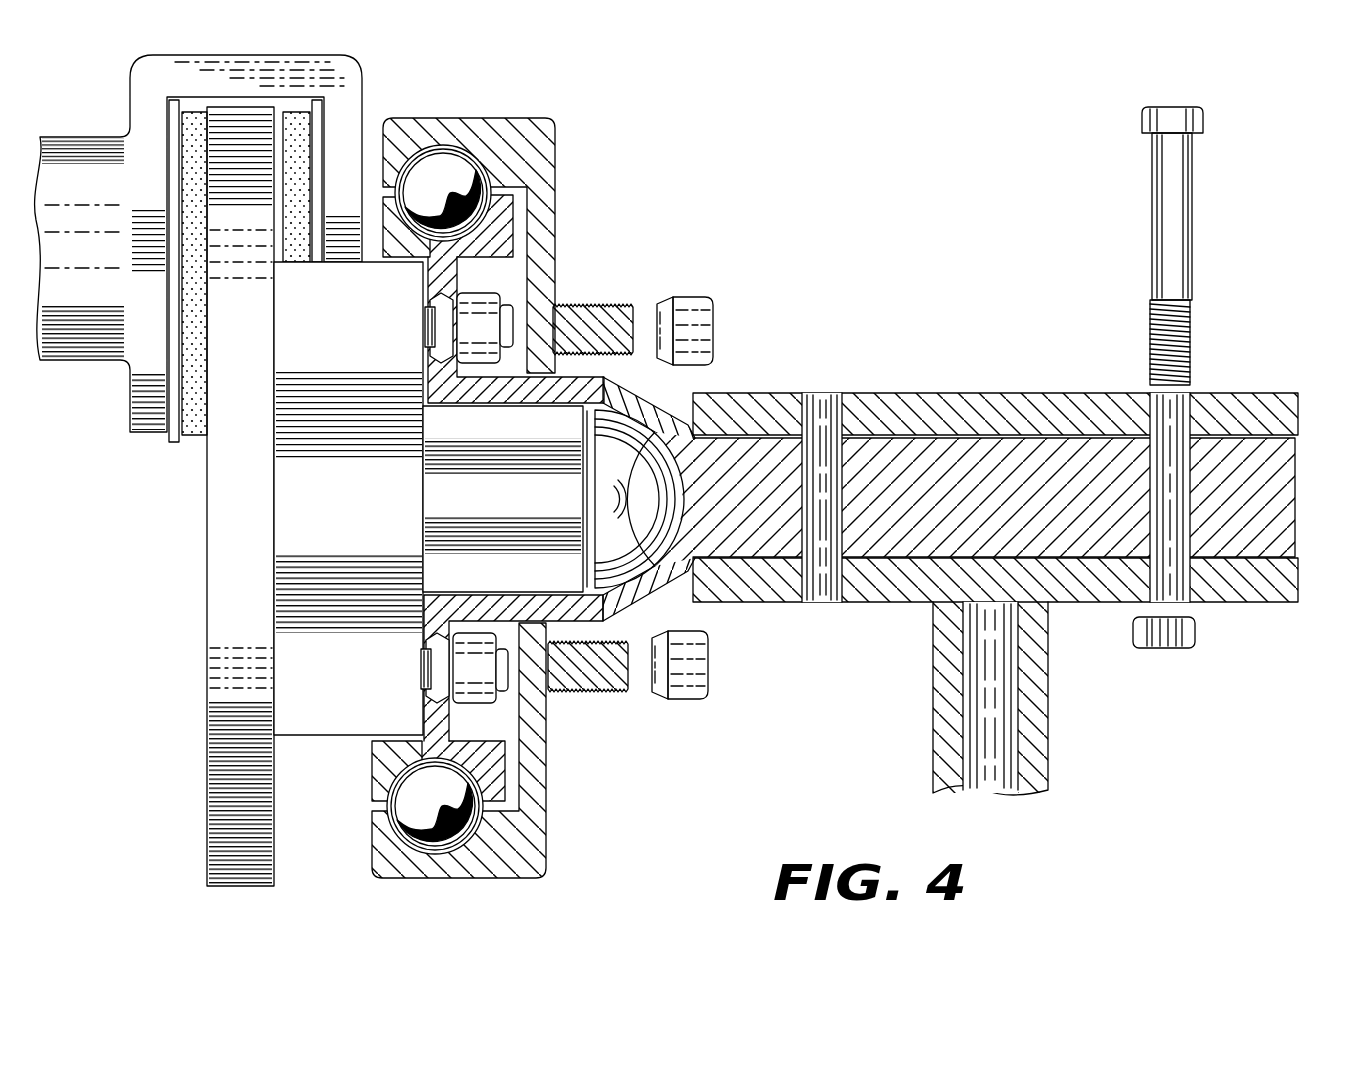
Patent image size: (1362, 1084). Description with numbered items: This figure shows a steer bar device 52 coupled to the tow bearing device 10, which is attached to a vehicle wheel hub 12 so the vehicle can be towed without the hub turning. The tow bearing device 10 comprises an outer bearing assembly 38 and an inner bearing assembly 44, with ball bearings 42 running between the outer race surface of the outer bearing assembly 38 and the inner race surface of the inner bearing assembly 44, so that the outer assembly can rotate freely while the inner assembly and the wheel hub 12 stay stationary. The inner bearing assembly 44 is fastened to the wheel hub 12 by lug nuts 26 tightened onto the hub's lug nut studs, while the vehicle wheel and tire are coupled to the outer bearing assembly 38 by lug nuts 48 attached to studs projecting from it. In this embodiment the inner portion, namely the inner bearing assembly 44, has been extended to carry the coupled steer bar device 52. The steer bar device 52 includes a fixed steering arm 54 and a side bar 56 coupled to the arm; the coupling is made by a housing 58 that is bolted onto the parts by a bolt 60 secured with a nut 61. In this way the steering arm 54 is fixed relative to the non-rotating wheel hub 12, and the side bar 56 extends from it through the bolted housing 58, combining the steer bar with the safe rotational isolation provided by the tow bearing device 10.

The tow bearing device 10 is at (593, 177).
The vehicle wheel hub 12 is at (562, 435).
The lug nuts 26 is at (483, 307).
The outer bearing assembly 38 is at (515, 135).
The ball bearings 42 is at (442, 160).
The inner bearing assembly 44 is at (507, 233).
The lug nuts 48 is at (703, 296).
The steer bar device 52 is at (850, 390).
The fixed steering arm 54 is at (1285, 475).
The side bar 56 is at (1038, 745).
The housing 58 is at (1058, 405).
The bolt 60 is at (1192, 250).
The nut 61 is at (1197, 638).